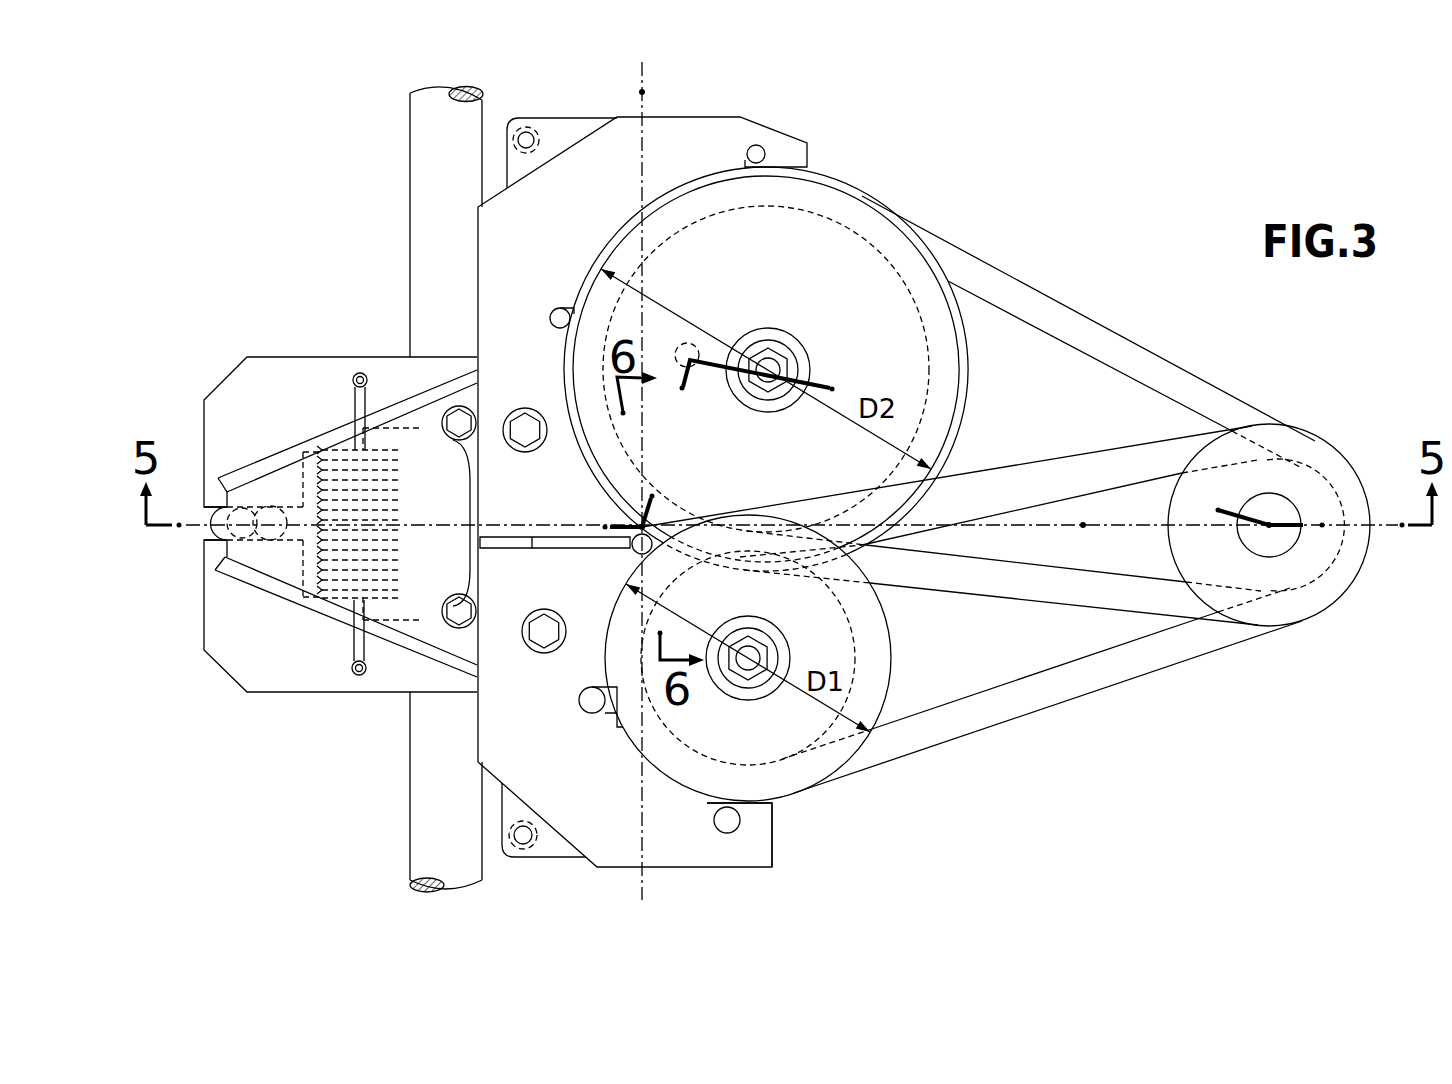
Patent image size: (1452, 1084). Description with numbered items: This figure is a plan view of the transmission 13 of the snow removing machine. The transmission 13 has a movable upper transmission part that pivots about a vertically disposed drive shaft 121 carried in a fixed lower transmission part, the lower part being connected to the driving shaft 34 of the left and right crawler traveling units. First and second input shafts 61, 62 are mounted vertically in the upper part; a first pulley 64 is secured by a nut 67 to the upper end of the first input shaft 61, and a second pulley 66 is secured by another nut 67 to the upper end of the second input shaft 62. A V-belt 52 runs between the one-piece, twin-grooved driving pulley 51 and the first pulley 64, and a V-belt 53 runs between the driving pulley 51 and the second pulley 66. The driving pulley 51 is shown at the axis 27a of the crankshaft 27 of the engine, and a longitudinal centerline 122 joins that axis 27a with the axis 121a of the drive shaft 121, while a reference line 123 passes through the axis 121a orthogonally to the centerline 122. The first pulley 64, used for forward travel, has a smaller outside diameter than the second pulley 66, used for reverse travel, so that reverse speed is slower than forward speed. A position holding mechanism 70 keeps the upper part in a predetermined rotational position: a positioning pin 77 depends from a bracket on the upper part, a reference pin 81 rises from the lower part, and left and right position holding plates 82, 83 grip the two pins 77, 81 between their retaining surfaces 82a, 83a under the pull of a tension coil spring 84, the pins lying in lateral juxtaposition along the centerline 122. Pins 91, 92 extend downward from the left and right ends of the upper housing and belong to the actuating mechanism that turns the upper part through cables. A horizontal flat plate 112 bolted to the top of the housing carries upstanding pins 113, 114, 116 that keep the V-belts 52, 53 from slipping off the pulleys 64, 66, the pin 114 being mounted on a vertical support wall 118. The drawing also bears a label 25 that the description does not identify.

The transmission 13 is at (347, 155).
The belt drive unit 25 is at (1109, 241).
The crankshaft 27 is at (1275, 505).
The axis of the crankshaft 27a is at (1275, 528).
The driving shaft 34 is at (423, 832).
The driving pulley 51 is at (1316, 608).
The V-belt 52 is at (1190, 650).
The V-belt 53 is at (1163, 376).
The first input shaft 61 is at (750, 668).
The second input shaft 62 is at (773, 357).
The first pulley 64 is at (873, 683).
The second pulley 66 is at (893, 280).
The nut 67 is at (788, 360).
The position holding mechanism 70 is at (236, 333).
The positioning pin 77 is at (287, 478).
The reference pin 81 is at (205, 533).
The position holding plate 82 is at (254, 670).
The retaining surface 82a is at (212, 660).
The position holding plate 83 is at (231, 388).
The retaining surface 83a is at (212, 497).
The tension coil spring 84 is at (357, 637).
The pin 91 is at (509, 846).
The pin 92 is at (526, 128).
The horizontal flat plate 112 is at (665, 846).
The pin 113 is at (590, 713).
The pin 114 is at (632, 545).
The pin 116 is at (558, 310).
The vertical support wall 118 is at (482, 541).
The drive shaft 121 is at (637, 503).
The axis of the drive shaft 121a is at (632, 546).
The centerline 122 is at (1083, 528).
The reference line 123 is at (646, 90).